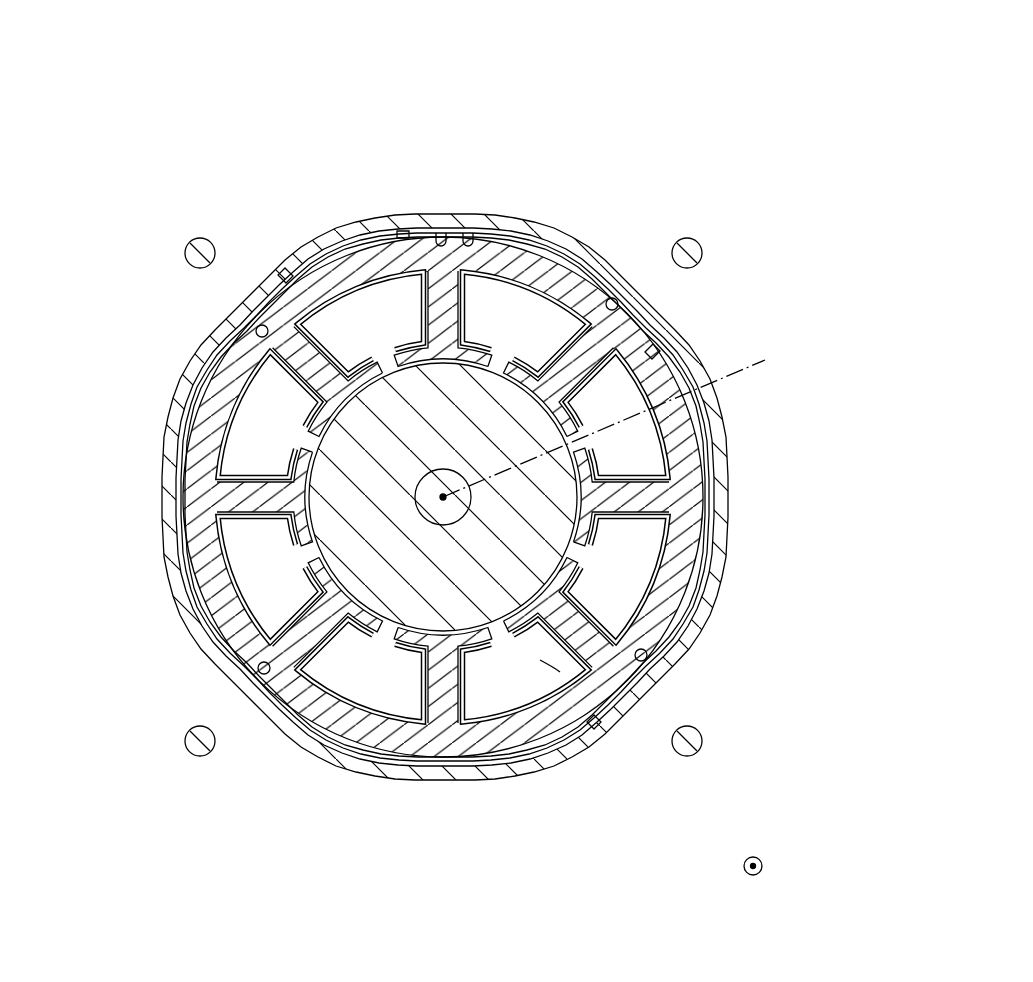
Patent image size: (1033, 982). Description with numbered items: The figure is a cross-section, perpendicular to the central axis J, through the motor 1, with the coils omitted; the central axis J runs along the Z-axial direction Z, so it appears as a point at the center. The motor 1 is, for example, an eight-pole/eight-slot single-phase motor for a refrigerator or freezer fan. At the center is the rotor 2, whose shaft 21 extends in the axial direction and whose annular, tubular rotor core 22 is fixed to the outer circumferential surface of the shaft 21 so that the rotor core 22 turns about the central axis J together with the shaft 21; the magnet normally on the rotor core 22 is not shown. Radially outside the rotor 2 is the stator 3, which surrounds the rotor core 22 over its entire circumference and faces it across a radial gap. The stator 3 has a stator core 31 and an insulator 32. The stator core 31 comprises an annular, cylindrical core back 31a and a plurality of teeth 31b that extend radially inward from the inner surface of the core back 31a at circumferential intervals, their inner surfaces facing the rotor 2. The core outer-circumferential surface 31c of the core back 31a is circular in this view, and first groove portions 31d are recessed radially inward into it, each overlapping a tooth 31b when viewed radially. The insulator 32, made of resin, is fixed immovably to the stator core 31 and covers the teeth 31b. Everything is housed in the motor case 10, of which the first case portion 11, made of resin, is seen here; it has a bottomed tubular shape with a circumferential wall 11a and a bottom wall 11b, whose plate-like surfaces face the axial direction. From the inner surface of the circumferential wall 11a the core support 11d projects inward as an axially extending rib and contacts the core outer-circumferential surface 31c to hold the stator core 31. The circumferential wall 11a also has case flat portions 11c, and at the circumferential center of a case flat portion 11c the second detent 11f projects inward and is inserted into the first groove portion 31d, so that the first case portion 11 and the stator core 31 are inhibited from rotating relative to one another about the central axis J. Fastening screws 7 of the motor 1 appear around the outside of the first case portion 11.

The motor 1 is at (693, 112).
The rotor 2 is at (578, 547).
The stator 3 is at (710, 516).
The fastening screw 7 is at (694, 247).
The motor case 10 is at (519, 214).
The first case portion 11 is at (578, 232).
The circumferential wall 11a is at (721, 462).
The bottom wall 11b is at (546, 665).
The case flat portion 11c is at (291, 283).
The core support 11d is at (262, 330).
The second detent 11f is at (473, 233).
The shaft 21 is at (448, 525).
The rotor core 22 is at (485, 598).
The stator core 31 is at (198, 527).
The core back 31a is at (215, 595).
The teeth 31b is at (440, 317).
The core outer-circumferential surface 31c is at (223, 643).
The first groove portion 31d is at (442, 233).
The insulator 32 is at (345, 714).
The central axis J is at (611, 418).
The Z-axial direction Z is at (766, 865).